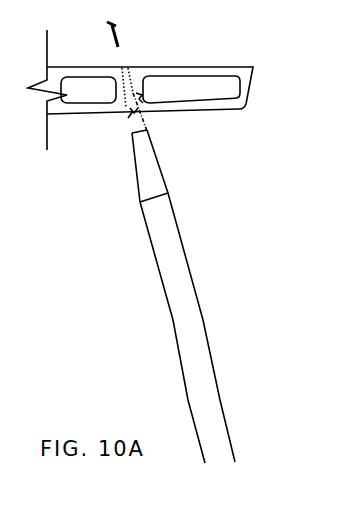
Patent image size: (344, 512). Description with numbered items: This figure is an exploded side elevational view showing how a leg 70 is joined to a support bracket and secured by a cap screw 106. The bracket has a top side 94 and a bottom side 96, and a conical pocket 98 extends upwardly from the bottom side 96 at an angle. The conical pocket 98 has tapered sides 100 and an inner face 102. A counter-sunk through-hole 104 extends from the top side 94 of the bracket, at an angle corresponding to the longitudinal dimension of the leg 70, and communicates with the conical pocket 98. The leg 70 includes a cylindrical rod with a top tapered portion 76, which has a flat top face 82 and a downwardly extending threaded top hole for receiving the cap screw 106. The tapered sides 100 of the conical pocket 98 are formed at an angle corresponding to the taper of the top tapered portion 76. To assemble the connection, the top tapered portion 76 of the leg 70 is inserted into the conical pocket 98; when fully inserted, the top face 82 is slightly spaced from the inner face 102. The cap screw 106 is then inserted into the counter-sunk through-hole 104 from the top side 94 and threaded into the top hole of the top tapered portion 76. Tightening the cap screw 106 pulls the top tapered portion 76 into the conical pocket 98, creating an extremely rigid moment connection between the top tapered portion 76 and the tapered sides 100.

The leg 70 is at (148, 296).
The top tapered portion 76 is at (164, 175).
The flat top face 82 is at (131, 133).
The top side 94 is at (215, 67).
The bottom side 96 is at (229, 110).
The conical pocket 98 is at (128, 118).
The tapered sides 100 is at (140, 114).
The inner face 102 is at (135, 93).
The counter-sunk through-hole 104 is at (127, 68).
The cap screw 106 is at (111, 42).